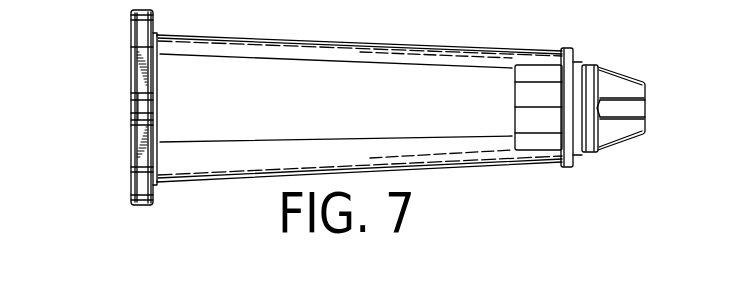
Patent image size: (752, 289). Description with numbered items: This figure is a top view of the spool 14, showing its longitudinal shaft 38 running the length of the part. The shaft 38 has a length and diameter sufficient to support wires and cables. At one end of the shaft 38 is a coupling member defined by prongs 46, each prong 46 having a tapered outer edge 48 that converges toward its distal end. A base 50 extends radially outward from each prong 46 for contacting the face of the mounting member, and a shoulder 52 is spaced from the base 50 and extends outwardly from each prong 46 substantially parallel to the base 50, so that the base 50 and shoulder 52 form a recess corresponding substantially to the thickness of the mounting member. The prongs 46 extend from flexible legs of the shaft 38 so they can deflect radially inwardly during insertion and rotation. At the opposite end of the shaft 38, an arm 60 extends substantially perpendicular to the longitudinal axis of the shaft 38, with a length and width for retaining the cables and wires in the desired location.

The spool 14 is at (115, 135).
The longitudinal shaft 38 is at (292, 41).
The prongs 46 is at (647, 135).
The tapered outer edge 48 is at (622, 76).
The base 50 is at (568, 47).
The shoulder 52 is at (590, 153).
The arm 60 is at (130, 77).